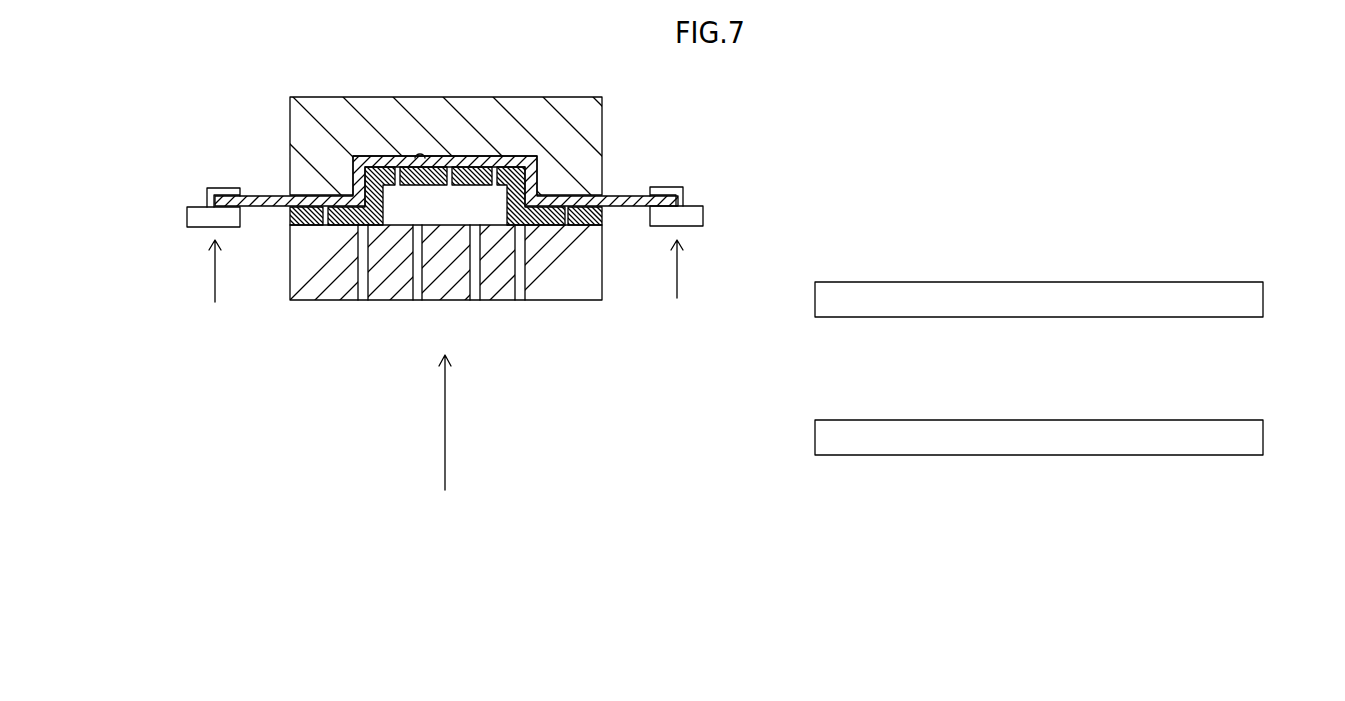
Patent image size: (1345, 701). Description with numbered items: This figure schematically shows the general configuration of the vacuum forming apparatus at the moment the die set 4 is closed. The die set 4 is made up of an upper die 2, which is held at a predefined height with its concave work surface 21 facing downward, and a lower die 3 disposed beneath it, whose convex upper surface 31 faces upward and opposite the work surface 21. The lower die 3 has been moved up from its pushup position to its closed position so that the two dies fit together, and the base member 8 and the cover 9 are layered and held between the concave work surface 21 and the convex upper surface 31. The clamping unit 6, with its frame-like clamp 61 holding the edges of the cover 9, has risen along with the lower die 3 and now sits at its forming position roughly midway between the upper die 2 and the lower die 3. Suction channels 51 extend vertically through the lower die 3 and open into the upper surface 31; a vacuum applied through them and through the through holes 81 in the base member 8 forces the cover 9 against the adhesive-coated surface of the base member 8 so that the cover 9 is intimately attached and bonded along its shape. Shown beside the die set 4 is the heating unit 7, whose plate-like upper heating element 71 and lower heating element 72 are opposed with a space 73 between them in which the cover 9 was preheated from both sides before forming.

The upper die 2 is at (572, 132).
The lower die 3 is at (590, 259).
The die set 4 is at (467, 213).
The clamping unit 6 is at (196, 201).
The heating unit 7 is at (1068, 417).
The base member 8 is at (290, 216).
The cover 9 is at (358, 180).
The work surface 21 is at (414, 156).
The upper surface 31 is at (519, 178).
The suction channel 51 is at (363, 280).
The clamp 61 is at (195, 220).
The upper heating element 71 is at (1252, 297).
The lower heating element 72 is at (1248, 435).
The space 73 is at (1208, 361).
The through hole 81 is at (325, 212).